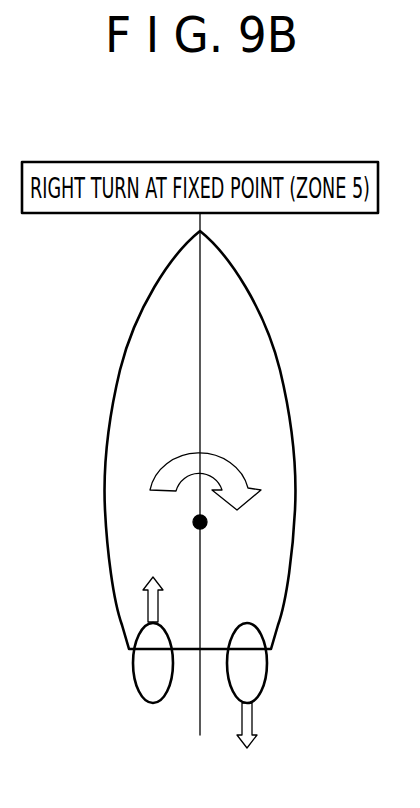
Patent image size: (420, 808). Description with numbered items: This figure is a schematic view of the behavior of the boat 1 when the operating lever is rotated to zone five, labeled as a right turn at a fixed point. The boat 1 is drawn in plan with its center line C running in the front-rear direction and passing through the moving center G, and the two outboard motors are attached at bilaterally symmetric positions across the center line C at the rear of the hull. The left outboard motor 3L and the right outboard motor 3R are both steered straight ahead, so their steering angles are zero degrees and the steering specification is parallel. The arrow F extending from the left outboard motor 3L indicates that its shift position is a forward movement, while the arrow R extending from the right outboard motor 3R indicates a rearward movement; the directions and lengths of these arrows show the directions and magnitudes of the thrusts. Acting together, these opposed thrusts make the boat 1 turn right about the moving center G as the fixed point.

The boat 1 is at (280, 362).
The center line C is at (199, 317).
The moving center G is at (206, 527).
The left outboard motor 3L is at (134, 671).
The right outboard motor 3R is at (267, 655).
The arrow indicating forward movement F is at (153, 583).
The arrow indicating rearward movement R is at (263, 713).